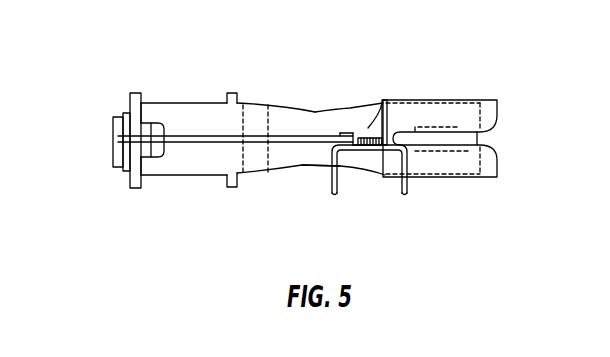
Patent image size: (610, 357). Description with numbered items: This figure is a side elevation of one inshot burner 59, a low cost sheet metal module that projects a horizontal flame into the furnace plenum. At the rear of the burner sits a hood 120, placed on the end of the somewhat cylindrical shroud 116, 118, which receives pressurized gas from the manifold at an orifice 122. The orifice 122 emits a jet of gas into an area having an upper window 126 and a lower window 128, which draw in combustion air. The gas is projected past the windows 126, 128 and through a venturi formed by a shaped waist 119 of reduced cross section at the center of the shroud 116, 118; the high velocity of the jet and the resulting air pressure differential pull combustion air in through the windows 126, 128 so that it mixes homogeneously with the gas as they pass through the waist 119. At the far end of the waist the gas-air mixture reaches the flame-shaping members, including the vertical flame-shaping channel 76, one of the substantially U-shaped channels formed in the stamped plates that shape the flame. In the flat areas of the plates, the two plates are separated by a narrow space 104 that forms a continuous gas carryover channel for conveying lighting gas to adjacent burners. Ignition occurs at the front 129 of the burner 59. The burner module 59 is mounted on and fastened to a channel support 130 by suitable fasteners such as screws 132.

The orifice 122 is at (163, 120).
The upper window 126 is at (188, 102).
The lower window 128 is at (167, 178).
The hood 120 is at (236, 88).
The cylindrical shroud 116 is at (291, 107).
The shaped waist 119 is at (339, 108).
The cylindrical shroud 118 is at (292, 166).
The inshot burner 59 is at (310, 172).
The screw 132 is at (386, 100).
The channel support 130 is at (407, 186).
The front of the burner 129 is at (510, 159).
The vertical flame-shaping channel 76 is at (424, 125).
The narrow space 104 is at (458, 128).